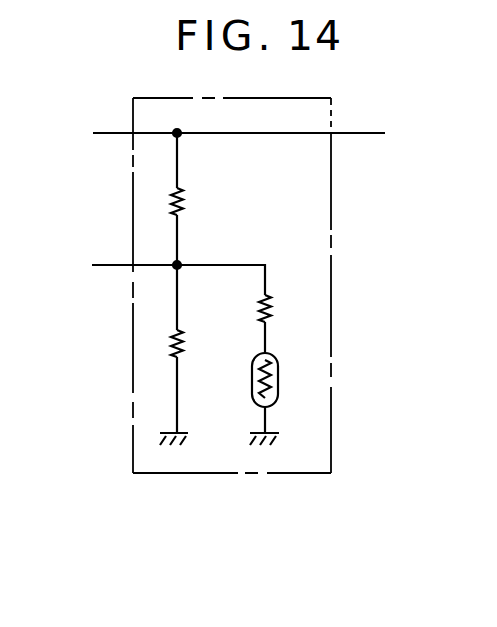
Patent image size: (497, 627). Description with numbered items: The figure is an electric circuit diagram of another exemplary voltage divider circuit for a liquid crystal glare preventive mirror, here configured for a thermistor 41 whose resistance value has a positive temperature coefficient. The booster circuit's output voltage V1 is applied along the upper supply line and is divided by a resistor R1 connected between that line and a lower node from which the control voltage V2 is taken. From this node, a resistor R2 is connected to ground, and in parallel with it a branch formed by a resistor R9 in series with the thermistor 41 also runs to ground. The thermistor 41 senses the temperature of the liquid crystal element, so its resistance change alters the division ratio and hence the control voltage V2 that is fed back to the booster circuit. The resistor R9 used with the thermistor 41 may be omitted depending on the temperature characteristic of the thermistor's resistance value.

The output voltage V1 is at (112, 133).
The control voltage V2 is at (105, 266).
The resistor R1 is at (184, 206).
The resistor R2 is at (184, 346).
The resistor R9 is at (272, 312).
The thermistor 41 is at (272, 397).